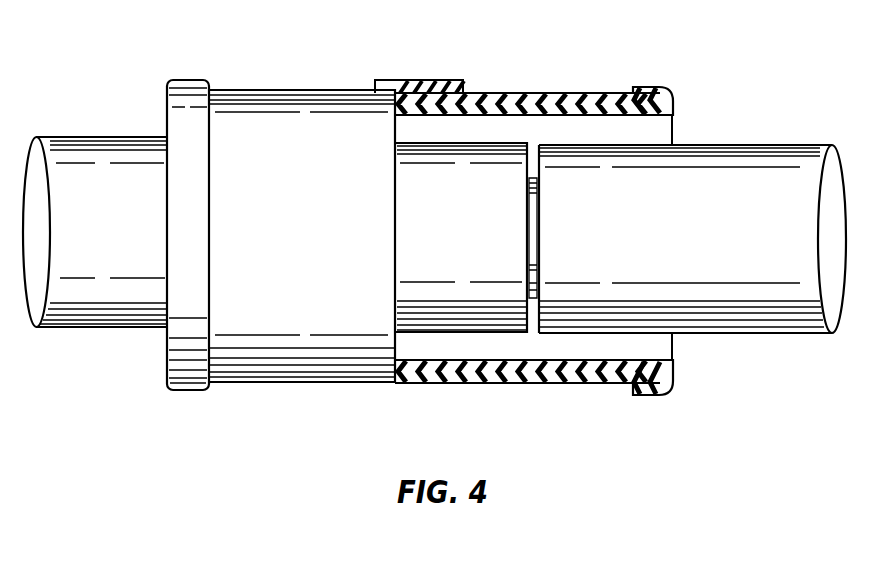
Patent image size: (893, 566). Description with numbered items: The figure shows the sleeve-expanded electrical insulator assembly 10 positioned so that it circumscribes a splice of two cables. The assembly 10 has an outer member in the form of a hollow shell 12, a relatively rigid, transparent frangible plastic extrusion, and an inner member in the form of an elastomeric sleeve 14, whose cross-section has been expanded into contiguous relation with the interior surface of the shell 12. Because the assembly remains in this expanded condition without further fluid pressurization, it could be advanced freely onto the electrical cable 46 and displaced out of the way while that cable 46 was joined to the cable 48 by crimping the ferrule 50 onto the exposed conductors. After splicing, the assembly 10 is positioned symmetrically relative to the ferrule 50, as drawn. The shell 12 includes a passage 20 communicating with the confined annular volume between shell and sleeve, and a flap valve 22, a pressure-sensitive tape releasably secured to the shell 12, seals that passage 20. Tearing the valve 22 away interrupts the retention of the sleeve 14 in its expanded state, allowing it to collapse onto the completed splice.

The electrical insulator assembly 10 is at (517, 70).
The hollow shell 12 is at (575, 93).
The elastomeric sleeve 14 is at (598, 117).
The passage 20 is at (414, 98).
The flap valve 22 is at (447, 82).
The electrical cable 46 is at (88, 327).
The cable 48 is at (737, 333).
The ferrule 50 is at (459, 250).